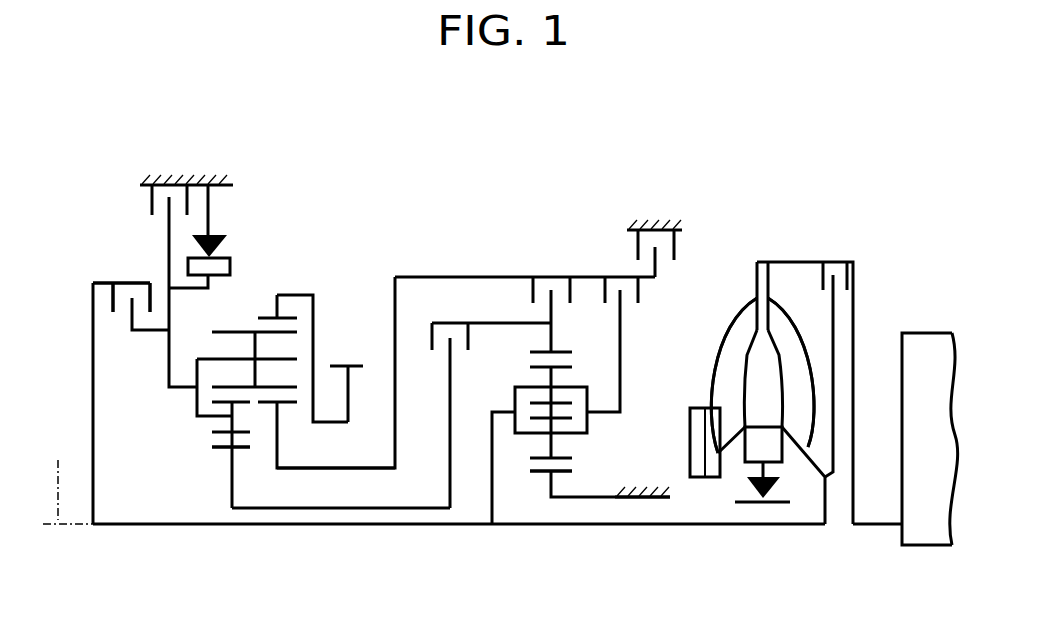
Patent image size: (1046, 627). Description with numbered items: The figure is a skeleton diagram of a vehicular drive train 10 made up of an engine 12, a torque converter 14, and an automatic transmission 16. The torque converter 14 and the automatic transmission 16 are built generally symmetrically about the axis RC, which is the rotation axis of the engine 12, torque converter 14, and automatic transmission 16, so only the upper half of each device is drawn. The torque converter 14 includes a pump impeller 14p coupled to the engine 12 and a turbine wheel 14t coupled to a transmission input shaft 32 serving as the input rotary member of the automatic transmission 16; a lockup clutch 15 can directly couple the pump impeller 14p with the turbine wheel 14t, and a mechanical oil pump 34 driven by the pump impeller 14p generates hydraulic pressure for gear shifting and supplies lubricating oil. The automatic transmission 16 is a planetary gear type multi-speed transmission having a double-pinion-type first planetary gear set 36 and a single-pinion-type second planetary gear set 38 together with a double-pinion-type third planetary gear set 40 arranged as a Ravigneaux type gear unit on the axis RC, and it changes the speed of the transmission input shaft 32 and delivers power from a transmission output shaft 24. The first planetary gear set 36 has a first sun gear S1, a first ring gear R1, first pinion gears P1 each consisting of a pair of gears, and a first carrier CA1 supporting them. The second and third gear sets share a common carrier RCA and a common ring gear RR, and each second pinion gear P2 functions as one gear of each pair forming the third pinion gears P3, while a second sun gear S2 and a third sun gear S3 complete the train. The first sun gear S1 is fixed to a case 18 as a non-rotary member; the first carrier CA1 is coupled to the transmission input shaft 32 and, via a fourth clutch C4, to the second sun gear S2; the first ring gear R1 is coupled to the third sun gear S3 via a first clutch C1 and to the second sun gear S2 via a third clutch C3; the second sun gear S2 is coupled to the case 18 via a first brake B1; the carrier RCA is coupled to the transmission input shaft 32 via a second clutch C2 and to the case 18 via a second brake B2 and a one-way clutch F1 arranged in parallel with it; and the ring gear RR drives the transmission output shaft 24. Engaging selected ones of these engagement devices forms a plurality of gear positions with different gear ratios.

The vehicular drive train 10 is at (763, 113).
The engine 12 is at (930, 340).
The torque converter 14 is at (760, 233).
The pump impeller 14p is at (728, 345).
The turbine wheel 14t is at (797, 348).
The lockup clutch 15 is at (868, 262).
The automatic transmission 16 is at (550, 200).
The case 18 is at (197, 176).
The transmission output shaft 24 is at (353, 364).
The transmission input shaft 32 is at (758, 526).
The mechanical oil pump 34 is at (697, 420).
The first planetary gear set 36 is at (556, 553).
The second planetary gear set 38 is at (300, 553).
The third planetary gear set 40 is at (226, 550).
The first brake B1 is at (673, 253).
The second brake B2 is at (151, 203).
The first clutch C1 is at (491, 400).
The second clutch C2 is at (121, 283).
The third clutch C3 is at (551, 298).
The fourth clutch C4 is at (620, 274).
The one-way clutch F1 is at (215, 236).
The first pinion gears P1 is at (584, 354).
The second pinion gears P2 is at (241, 330).
The third pinion gears P3 is at (211, 430).
The first ring gear R1 is at (548, 348).
The ring gear RR is at (263, 316).
The first sun gear S1 is at (545, 473).
The second sun gear S2 is at (290, 405).
The third sun gear S3 is at (215, 449).
The first carrier CA1 is at (588, 422).
The carrier RCA is at (195, 412).
The axis RC is at (68, 479).